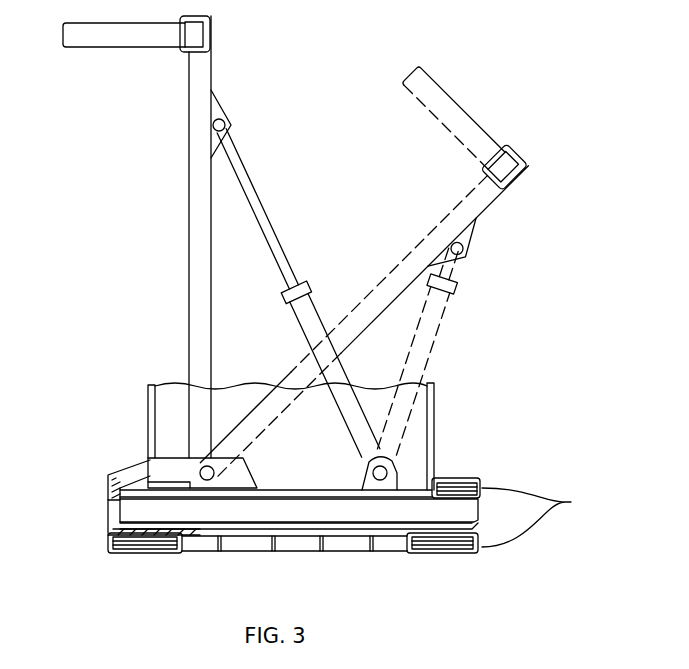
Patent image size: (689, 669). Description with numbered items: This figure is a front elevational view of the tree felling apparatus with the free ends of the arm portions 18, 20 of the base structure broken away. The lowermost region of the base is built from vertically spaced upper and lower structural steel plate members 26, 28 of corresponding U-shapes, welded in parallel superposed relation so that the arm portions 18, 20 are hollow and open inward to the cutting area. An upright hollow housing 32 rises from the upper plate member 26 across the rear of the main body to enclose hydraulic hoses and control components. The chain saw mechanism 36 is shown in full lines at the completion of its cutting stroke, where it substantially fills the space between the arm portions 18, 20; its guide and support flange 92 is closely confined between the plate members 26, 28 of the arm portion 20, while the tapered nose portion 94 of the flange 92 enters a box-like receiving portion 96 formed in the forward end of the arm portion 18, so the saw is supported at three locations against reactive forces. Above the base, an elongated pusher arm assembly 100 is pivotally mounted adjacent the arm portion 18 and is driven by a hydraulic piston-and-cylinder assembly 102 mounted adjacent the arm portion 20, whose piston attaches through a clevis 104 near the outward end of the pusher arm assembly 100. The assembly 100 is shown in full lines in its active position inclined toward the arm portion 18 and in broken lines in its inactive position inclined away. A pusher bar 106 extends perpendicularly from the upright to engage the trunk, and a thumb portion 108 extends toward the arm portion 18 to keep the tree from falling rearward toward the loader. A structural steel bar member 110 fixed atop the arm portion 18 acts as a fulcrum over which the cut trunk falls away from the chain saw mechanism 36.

The arm portion 18 is at (107, 504).
The arm portion 20 is at (542, 517).
The upper structural steel plate member 26 is at (293, 490).
The lower structural steel plate member 28 is at (143, 556).
The hollow housing 32 is at (437, 408).
The chain saw mechanism 36 is at (381, 512).
The guide and support flange 92 is at (240, 510).
The tapered nose portion 94 is at (135, 475).
The box-like receiving portion 96 is at (112, 530).
The pusher arm assembly 100 is at (195, 238).
The piston-and-cylinder assembly 102 is at (308, 302).
The clevis 104 is at (224, 108).
The pusher bar 106 is at (198, 35).
The thumb portion 108 is at (106, 40).
The structural steel bar member 110 is at (163, 468).